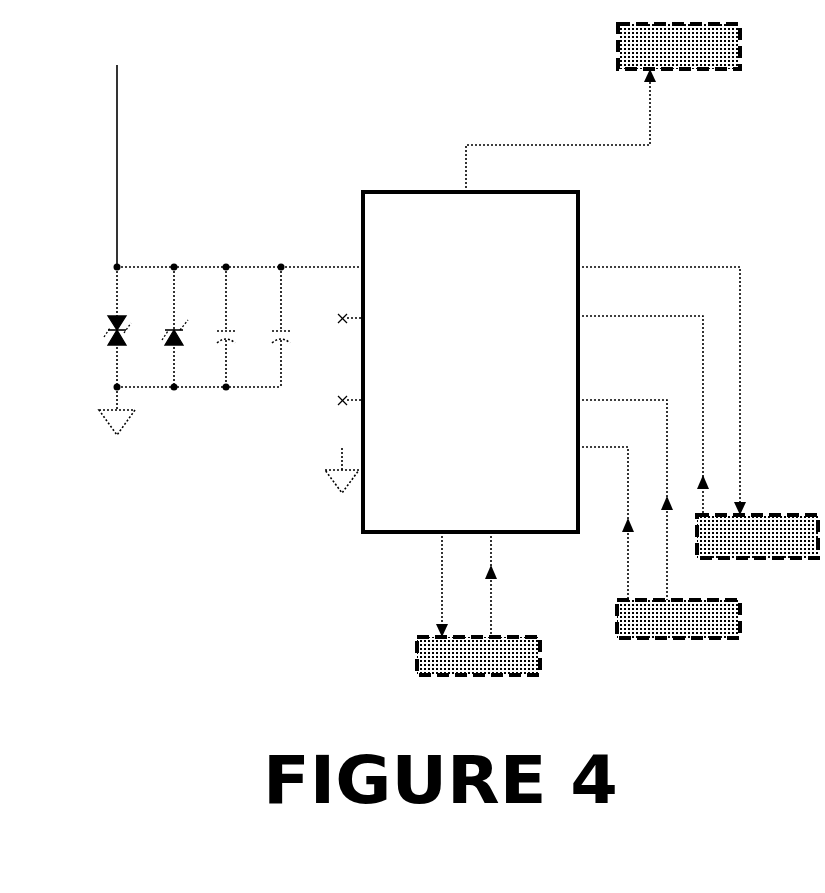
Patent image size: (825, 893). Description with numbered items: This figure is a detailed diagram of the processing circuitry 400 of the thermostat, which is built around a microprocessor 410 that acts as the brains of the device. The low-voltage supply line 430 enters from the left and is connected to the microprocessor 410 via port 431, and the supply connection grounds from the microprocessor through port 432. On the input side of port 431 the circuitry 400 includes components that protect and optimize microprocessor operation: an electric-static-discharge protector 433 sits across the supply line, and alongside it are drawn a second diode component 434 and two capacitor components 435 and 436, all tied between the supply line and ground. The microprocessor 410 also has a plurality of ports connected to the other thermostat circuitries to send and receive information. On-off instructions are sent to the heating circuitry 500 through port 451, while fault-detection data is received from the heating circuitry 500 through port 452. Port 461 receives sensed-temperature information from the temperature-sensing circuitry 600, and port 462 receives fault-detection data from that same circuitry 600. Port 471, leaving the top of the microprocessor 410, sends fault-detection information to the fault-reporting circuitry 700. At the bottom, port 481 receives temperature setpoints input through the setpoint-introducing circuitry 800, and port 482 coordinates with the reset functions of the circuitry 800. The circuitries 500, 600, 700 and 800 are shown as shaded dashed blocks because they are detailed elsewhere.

The processing circuitry 400 is at (443, 124).
The microprocessor 410 is at (470, 362).
The low-voltage supply line 430 is at (117, 98).
The port 431 is at (239, 256).
The port 432 is at (339, 459).
The electric-static-discharge protector 433 is at (96, 327).
The second protection diode D4b 434 is at (156, 327).
The first filter capacitor C4a 435 is at (245, 327).
The second filter capacitor C4b 436 is at (300, 327).
The port 451 is at (662, 379).
The port 452 is at (643, 403).
The port 461 is at (625, 488).
The port 462 is at (607, 512).
The port 471 is at (561, 130).
The port 481 is at (420, 584).
The port 482 is at (517, 584).
The heating circuitry 500 is at (757, 536).
The temperature-sensing circuitry 600 is at (678, 619).
The fault-reporting circuitry 700 is at (679, 46).
The setpoint-introducing circuitry 800 is at (478, 656).